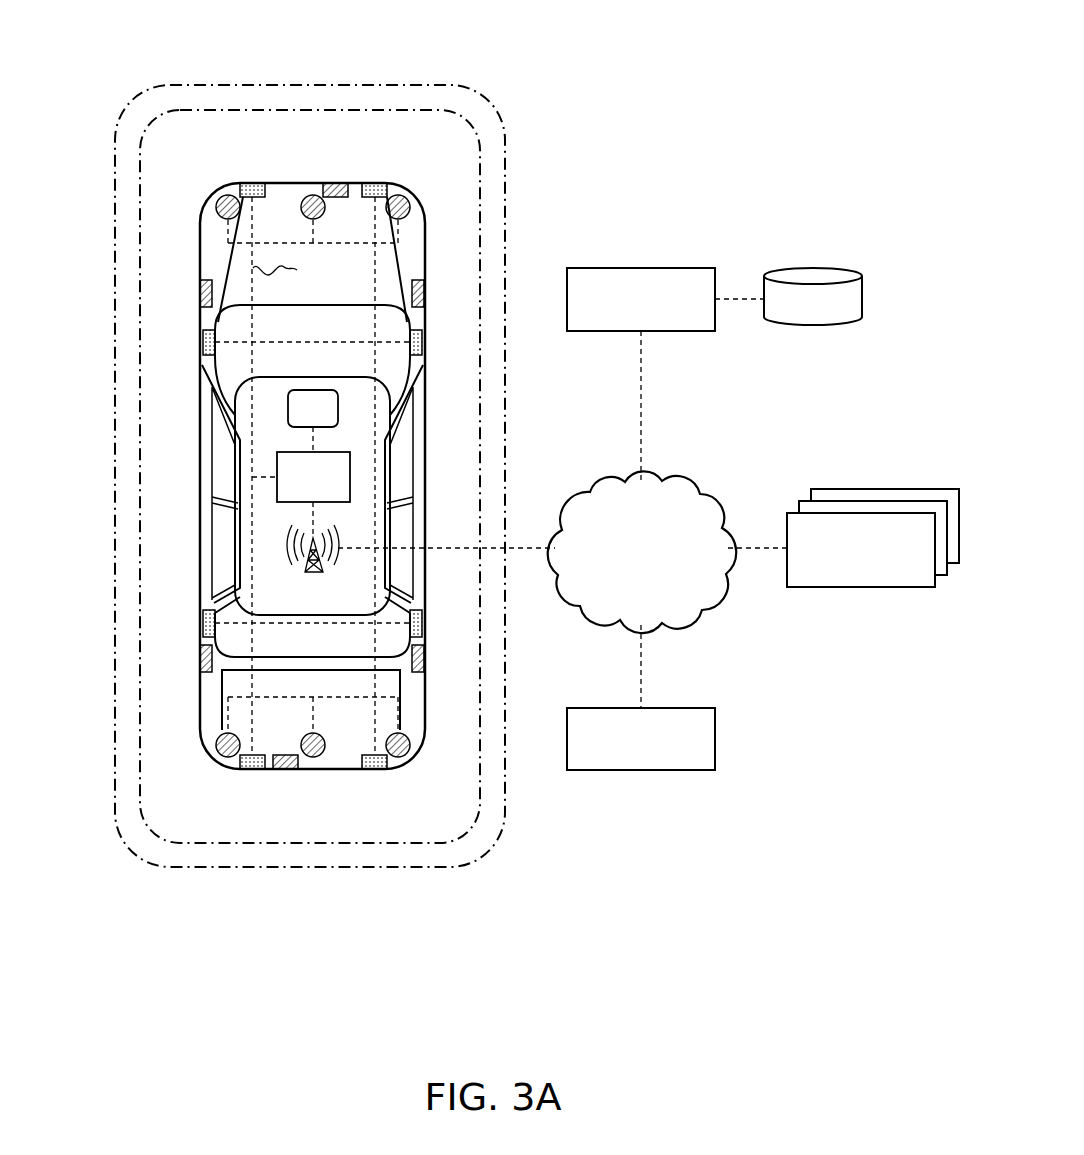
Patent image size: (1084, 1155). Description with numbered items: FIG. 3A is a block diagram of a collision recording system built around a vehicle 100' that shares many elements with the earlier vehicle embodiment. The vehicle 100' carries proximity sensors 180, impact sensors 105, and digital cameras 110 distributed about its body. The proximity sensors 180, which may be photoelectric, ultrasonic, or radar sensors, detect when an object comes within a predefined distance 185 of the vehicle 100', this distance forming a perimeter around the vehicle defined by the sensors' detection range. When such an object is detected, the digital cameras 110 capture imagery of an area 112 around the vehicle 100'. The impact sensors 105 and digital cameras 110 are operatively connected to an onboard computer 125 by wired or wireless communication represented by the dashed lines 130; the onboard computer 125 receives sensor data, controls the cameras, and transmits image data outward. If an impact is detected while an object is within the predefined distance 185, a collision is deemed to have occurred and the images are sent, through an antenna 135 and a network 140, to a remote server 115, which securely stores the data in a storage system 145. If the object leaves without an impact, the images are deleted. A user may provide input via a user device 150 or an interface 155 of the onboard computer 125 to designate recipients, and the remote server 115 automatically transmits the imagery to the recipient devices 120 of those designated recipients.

The vehicle 100' is at (233, 474).
The impact sensors 105 is at (252, 183).
The digital cameras 110 is at (222, 200).
The area 112 is at (347, 110).
The remote server 115 is at (664, 268).
The recipient devices 120 is at (897, 513).
The onboard computer 125 is at (300, 490).
The dashed lines 130 is at (292, 277).
The antenna 135 is at (312, 580).
The network 140 is at (675, 488).
The storage system 145 is at (811, 268).
The user device 150 is at (688, 708).
The interface 155 is at (300, 420).
The proximity sensors 180 is at (335, 183).
The predefined distance 185 is at (248, 85).